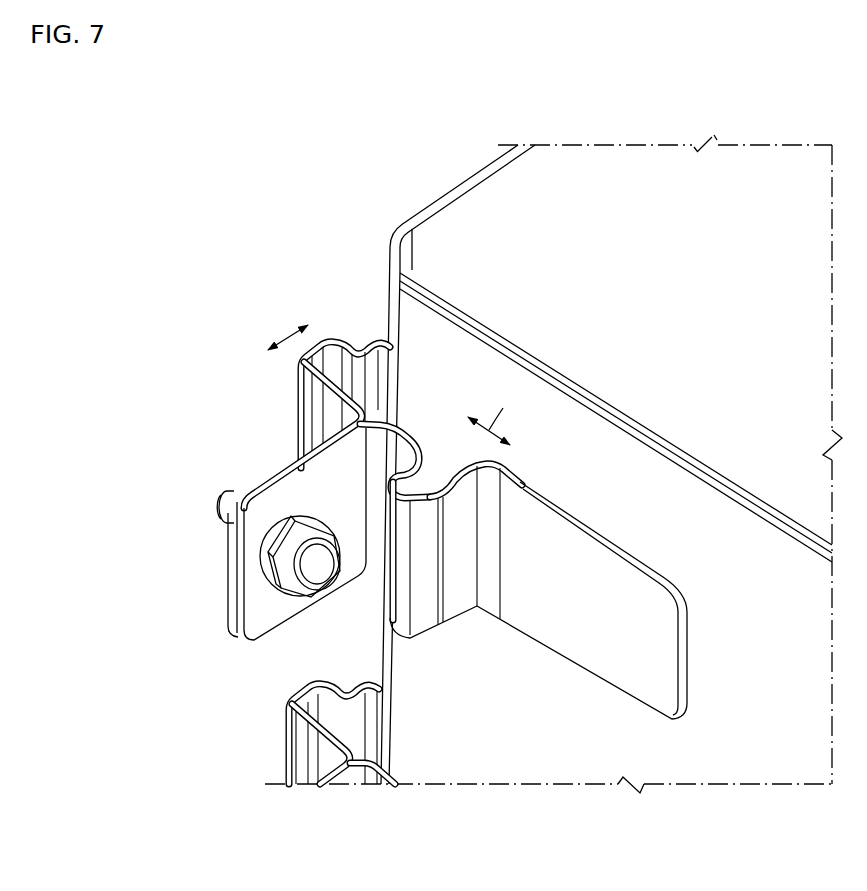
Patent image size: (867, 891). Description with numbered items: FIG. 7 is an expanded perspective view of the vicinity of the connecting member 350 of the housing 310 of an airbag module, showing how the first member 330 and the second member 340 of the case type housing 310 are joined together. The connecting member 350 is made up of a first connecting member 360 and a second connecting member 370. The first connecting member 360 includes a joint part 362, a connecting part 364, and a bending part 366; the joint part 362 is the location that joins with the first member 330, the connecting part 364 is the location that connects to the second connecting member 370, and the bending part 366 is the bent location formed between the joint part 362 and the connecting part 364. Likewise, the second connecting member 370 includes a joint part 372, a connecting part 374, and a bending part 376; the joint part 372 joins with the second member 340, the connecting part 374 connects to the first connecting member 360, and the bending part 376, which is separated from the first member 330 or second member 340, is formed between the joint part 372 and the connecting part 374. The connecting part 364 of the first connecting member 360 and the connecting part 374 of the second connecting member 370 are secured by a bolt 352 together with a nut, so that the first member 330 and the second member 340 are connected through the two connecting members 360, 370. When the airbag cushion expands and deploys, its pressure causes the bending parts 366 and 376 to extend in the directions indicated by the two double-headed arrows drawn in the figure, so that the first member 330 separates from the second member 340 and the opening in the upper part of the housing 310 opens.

The housing 310 is at (267, 145).
The first member 330 is at (711, 791).
The second member 340 is at (429, 191).
The connecting member 350 is at (238, 653).
The bolt 352 is at (321, 588).
The first connecting member 360 is at (460, 671).
The joint part 362 is at (611, 669).
The connecting part 364 is at (278, 618).
The bending part 366 is at (456, 605).
The second connecting member 370 is at (270, 387).
The joint part 372 is at (360, 346).
The connecting part 374 is at (268, 482).
The bending part 376 is at (335, 343).